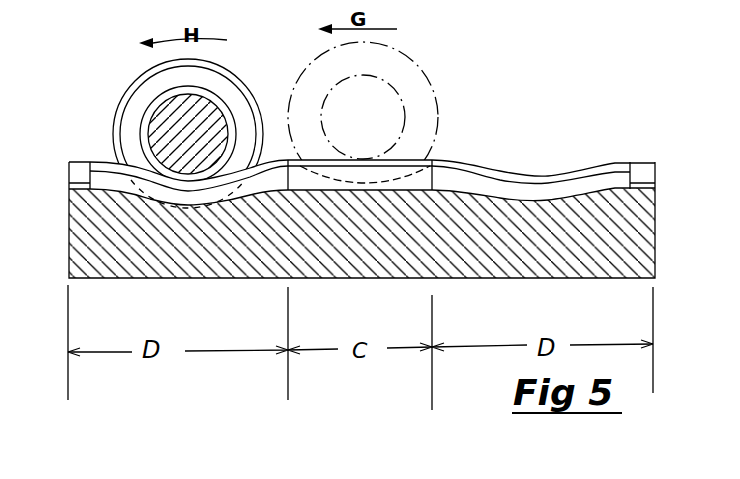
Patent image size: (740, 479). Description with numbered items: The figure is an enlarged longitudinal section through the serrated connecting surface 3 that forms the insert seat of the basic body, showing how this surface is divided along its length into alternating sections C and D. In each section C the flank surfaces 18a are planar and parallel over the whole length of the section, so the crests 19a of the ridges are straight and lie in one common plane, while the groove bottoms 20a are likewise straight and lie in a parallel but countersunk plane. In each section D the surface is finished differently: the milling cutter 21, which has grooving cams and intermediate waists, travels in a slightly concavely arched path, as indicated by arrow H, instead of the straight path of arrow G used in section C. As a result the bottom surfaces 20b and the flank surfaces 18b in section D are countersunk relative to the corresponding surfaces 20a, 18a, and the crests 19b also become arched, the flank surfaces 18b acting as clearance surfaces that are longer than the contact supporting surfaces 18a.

The connecting surface 3 is at (627, 145).
The flank surfaces 18a is at (433, 162).
The flank surfaces 18b is at (120, 184).
The crests 19a is at (389, 158).
The crests 19b is at (130, 150).
The groove bottoms 20a is at (366, 195).
The bottom surfaces 20b is at (190, 206).
The milling cutter 21 is at (120, 92).